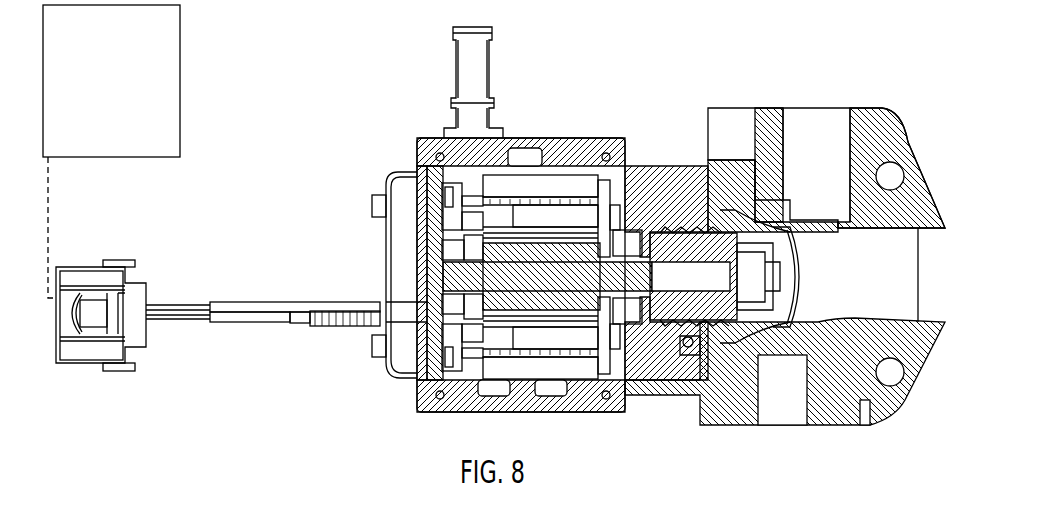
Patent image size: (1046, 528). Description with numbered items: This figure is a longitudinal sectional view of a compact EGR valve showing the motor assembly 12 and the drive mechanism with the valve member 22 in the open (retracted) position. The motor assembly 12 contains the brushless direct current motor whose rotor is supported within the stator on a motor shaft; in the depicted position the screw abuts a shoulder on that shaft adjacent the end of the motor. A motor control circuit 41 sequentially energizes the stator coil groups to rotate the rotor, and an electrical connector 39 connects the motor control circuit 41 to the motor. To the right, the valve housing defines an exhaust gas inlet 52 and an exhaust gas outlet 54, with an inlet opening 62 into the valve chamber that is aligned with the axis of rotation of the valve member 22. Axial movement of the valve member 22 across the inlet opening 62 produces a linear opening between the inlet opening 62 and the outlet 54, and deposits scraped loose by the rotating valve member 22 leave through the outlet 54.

The motor assembly 12 is at (388, 126).
The valve member 22 is at (690, 348).
The electrical connector 39 is at (146, 343).
The motor control circuit 41 is at (120, 89).
The exhaust gas inlet 52 is at (826, 108).
The exhaust gas outlet 54 is at (918, 277).
The inlet opening 62 is at (815, 200).